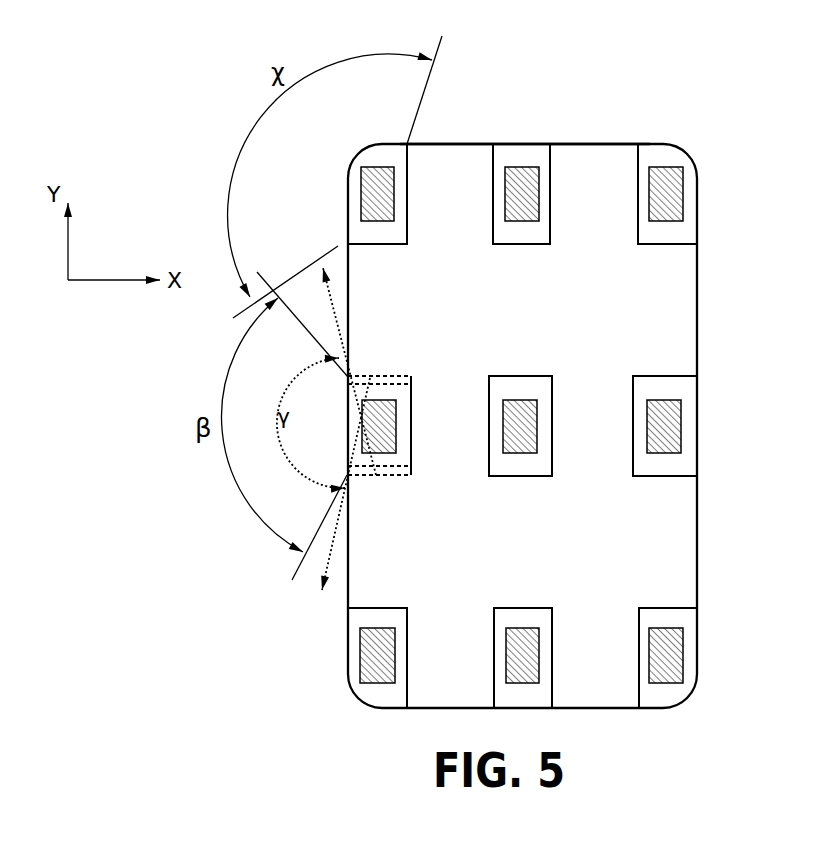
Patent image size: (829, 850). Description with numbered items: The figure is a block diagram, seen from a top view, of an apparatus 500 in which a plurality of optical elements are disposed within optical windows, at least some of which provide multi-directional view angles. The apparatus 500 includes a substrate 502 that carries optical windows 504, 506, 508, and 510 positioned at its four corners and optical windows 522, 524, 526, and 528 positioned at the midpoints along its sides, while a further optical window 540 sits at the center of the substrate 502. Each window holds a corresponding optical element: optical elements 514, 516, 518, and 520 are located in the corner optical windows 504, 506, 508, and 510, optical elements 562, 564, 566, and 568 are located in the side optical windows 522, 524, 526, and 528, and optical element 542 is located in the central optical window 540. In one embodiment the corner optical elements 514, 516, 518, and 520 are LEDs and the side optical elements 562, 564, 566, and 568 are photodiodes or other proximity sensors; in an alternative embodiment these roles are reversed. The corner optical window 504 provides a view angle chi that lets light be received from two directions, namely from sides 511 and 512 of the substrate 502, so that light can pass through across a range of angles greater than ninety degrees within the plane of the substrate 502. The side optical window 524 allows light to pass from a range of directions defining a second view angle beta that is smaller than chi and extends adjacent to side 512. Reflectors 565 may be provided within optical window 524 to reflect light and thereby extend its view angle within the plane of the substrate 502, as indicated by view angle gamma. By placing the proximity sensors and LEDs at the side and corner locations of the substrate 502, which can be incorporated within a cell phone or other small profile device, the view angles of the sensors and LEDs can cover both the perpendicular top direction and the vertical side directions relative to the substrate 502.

The apparatus 500 is at (153, 108).
The substrate 502 is at (697, 320).
The optical window 504 is at (373, 152).
The optical window 506 is at (664, 156).
The optical window 508 is at (342, 628).
The optical window 510 is at (642, 642).
The side 511 is at (572, 106).
The side 512 is at (252, 477).
The optical element 514 is at (348, 205).
The optical element 516 is at (650, 210).
The optical element 518 is at (362, 665).
The optical element 520 is at (652, 670).
The optical window 522 is at (513, 152).
The optical window 524 is at (431, 394).
The optical window 526 is at (645, 405).
The optical window 528 is at (494, 638).
The optical window 540 is at (527, 380).
The optical element 542 is at (502, 426).
The optical element 562 is at (503, 210).
The optical element 564 is at (386, 442).
The reflectors 565 is at (402, 390).
The optical element 566 is at (648, 440).
The optical element 568 is at (513, 670).